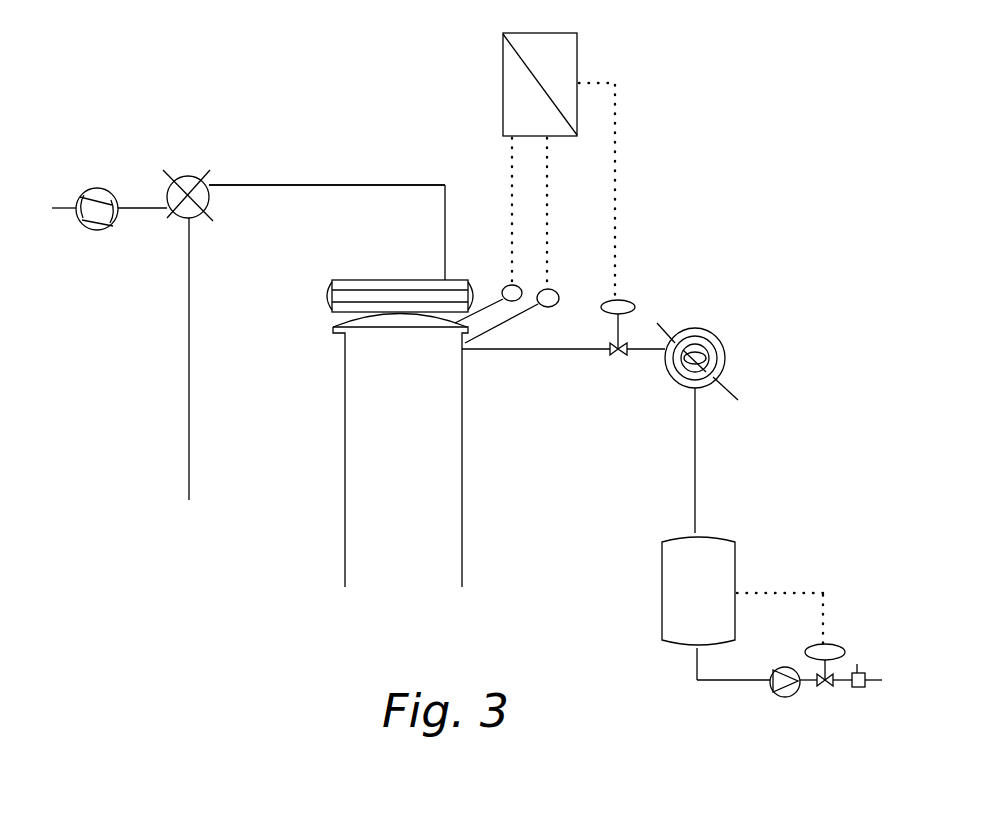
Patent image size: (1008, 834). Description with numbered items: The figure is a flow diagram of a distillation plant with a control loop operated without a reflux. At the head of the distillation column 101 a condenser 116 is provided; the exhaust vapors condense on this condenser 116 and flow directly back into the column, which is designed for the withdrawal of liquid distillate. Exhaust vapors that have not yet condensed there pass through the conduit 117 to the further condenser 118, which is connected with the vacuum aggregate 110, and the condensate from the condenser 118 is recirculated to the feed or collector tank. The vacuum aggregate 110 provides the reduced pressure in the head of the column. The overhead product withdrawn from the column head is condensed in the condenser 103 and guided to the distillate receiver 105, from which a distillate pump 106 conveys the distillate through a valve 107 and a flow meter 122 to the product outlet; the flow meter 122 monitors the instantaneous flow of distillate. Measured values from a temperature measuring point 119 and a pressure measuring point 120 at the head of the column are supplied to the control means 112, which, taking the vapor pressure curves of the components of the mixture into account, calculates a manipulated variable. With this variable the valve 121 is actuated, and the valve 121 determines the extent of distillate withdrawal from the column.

The distillation column 101 is at (440, 488).
The condenser 103 is at (720, 323).
The distillate receiver 105 is at (702, 544).
The distillate pump 106 is at (772, 692).
The valve 107 is at (826, 690).
The vacuum aggregate 110 is at (88, 190).
The control means 112 is at (568, 50).
The condenser 116 is at (327, 300).
The conduit 117 is at (290, 184).
The further condenser 118 is at (190, 180).
The temperature measuring point 119 is at (525, 287).
The pressure measuring point 120 is at (550, 306).
The valve 121 is at (622, 357).
The flow meter 122 is at (858, 688).